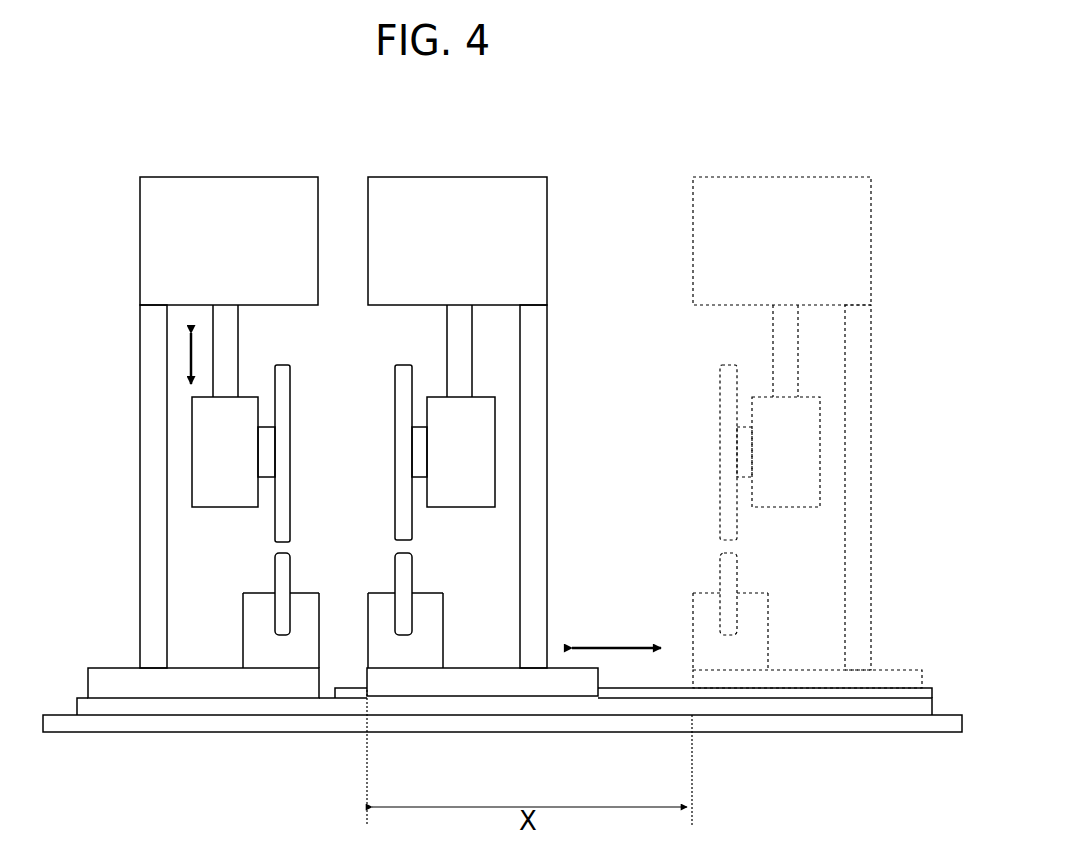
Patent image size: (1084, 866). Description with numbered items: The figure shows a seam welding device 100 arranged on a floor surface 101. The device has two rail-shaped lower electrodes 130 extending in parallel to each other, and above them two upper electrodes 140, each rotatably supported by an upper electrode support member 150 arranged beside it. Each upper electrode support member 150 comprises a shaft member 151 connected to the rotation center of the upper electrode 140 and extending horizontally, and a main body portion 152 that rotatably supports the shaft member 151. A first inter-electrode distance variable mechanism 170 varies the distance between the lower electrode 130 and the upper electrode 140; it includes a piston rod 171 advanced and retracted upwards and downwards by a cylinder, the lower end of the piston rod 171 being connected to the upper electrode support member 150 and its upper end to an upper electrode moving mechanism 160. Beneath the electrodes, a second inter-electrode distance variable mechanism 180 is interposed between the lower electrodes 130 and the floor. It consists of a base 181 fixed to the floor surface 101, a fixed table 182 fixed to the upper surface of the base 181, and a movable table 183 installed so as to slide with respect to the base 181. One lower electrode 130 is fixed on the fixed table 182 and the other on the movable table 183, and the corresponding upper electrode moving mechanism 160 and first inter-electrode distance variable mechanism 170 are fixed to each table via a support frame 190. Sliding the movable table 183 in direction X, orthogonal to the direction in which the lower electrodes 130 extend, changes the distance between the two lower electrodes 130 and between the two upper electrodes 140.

The seam welding device 100 is at (580, 106).
The floor surface 101 is at (783, 723).
The lower electrode 130 is at (400, 588).
The upper electrode 140 is at (400, 372).
The upper electrode support member 150 is at (496, 499).
The shaft member 151 is at (268, 480).
The main body portion 152 is at (204, 497).
The upper electrode moving mechanism 160 is at (143, 224).
The first inter-electrode distance variable mechanism 170 is at (432, 350).
The piston rod 171 is at (215, 323).
The second inter-electrode distance variable mechanism 180 is at (504, 763).
The base 181 is at (160, 708).
The fixed table 182 is at (228, 688).
The movable table 183 is at (338, 690).
The support frame 190 is at (143, 453).